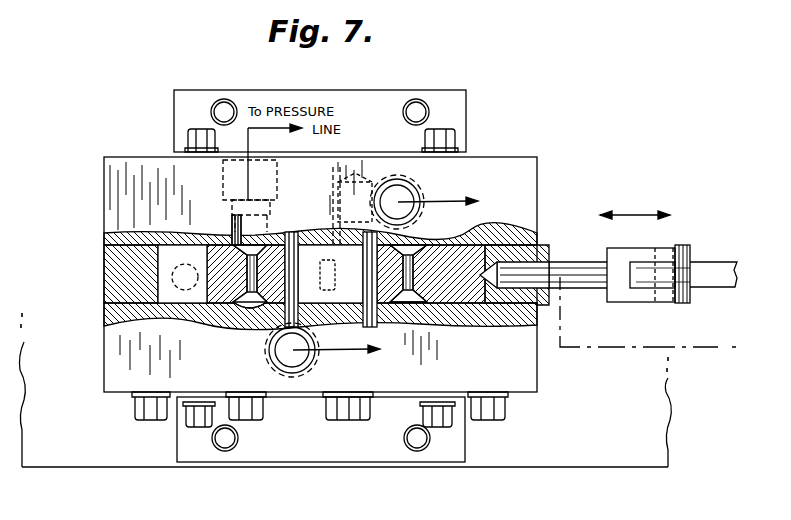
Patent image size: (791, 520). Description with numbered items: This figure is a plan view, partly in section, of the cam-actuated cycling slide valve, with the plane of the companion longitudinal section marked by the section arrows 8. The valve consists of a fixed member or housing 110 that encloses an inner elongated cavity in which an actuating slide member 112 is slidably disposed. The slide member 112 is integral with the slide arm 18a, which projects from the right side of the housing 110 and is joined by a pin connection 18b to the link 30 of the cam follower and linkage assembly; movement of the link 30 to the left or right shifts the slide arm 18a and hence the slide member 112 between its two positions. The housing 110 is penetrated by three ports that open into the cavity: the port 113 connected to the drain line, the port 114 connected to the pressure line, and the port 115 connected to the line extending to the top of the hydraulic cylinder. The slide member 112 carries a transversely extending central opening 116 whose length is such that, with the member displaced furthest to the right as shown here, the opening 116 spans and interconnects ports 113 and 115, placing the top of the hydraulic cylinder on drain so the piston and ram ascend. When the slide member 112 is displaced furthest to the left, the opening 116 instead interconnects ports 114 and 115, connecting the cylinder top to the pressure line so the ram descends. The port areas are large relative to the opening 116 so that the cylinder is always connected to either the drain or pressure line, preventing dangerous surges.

The housing 110 is at (527, 184).
The actuating slide member 112 is at (455, 298).
The drain port 113 is at (415, 190).
The pressure port 114 is at (235, 183).
The cylinder port 115 is at (267, 352).
The central opening 116 is at (297, 257).
The slide arm 18a is at (573, 265).
The pin connection 18b is at (670, 304).
The link 30 is at (699, 277).
The section line 8— 8 is at (104, 273).